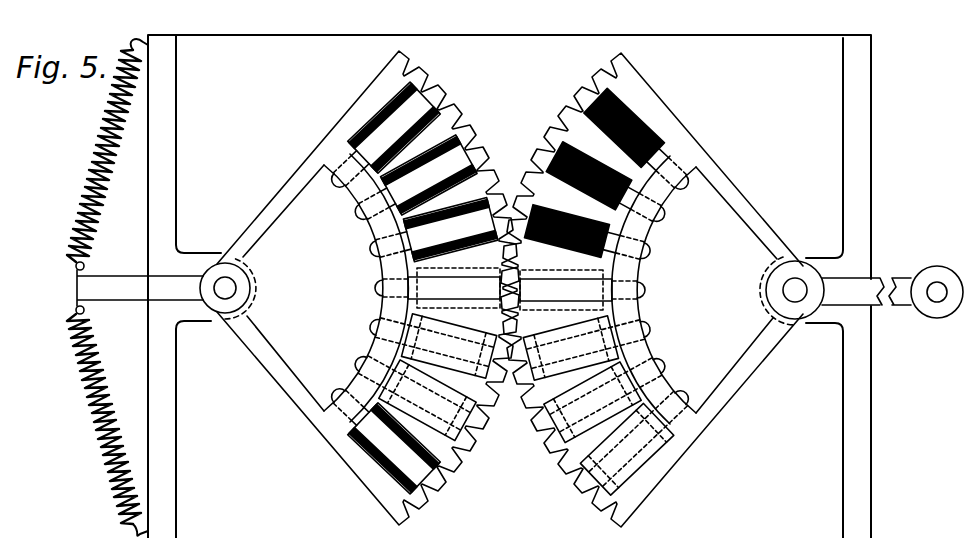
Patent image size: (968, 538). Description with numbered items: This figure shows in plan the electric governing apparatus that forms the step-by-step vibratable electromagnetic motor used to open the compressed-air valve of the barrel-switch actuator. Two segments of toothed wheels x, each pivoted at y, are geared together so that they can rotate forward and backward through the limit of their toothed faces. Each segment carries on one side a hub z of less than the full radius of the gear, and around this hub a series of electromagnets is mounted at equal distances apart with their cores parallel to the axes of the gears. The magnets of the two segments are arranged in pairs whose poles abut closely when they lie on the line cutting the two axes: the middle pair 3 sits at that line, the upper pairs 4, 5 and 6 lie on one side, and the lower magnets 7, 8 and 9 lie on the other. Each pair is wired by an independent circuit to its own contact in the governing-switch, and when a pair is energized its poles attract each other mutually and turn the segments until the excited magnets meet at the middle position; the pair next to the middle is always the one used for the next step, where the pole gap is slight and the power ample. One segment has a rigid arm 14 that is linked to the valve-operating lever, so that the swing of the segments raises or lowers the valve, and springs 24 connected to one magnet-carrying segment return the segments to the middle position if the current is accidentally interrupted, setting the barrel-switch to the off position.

The middle pair of magnets 3 is at (510, 289).
The upper pair of magnets 4 is at (556, 248).
The upper pair of magnets 5 is at (567, 174).
The upper pair of magnets 6 is at (508, 141).
The lower magnets 7 is at (510, 342).
The lower magnets 8 is at (510, 391).
The lower magnets 9 is at (397, 458).
The rigid arm 14 is at (880, 283).
The springs 24 is at (100, 146).
The segments of toothed wheels x is at (322, 440).
The pivot y is at (225, 290).
The hub z is at (380, 347).